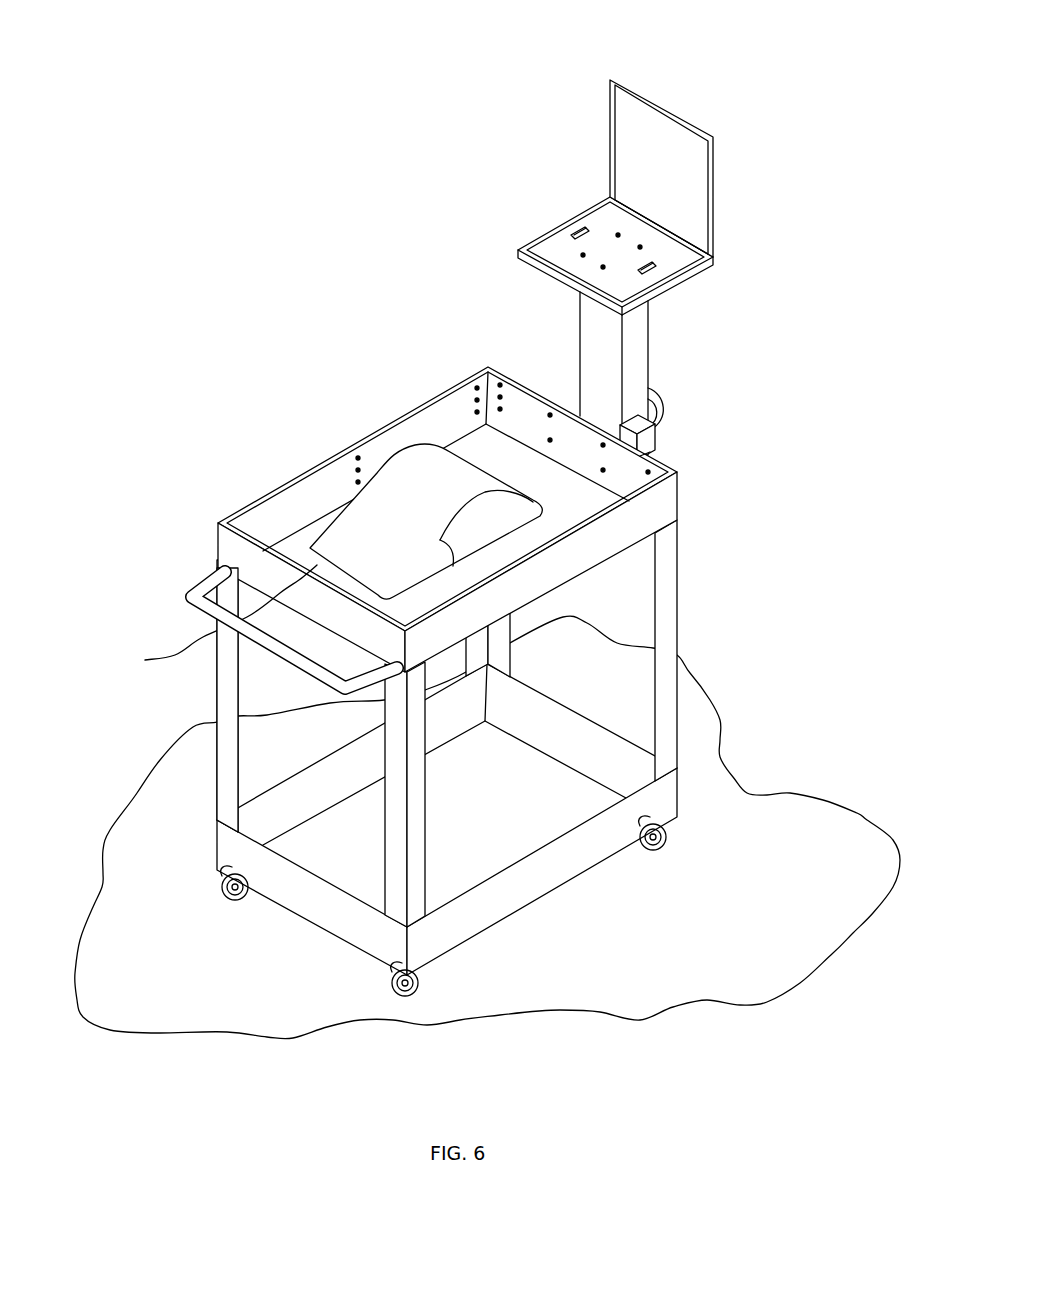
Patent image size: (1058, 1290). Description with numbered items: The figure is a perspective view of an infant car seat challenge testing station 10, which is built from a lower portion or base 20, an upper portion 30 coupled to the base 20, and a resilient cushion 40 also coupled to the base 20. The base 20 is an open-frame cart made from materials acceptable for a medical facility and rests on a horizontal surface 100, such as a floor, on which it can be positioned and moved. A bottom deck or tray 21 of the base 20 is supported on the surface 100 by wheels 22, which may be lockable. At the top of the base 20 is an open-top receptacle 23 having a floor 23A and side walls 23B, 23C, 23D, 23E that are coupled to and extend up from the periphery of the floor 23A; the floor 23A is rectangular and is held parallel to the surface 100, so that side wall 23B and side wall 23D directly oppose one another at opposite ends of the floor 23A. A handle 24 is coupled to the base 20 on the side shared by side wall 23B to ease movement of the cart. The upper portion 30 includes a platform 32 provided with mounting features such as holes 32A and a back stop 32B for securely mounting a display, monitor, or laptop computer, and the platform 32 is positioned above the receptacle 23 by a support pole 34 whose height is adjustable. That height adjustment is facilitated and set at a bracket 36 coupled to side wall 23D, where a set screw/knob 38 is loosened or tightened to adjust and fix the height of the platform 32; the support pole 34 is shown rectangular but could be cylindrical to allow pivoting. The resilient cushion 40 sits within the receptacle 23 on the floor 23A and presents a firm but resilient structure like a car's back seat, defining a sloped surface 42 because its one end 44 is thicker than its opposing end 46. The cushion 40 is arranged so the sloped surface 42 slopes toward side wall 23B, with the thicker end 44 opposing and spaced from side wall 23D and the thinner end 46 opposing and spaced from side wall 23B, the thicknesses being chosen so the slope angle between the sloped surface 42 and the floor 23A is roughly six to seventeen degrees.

The infant car seat challenge testing station 10 is at (260, 270).
The base 20 is at (479, 508).
The bottom deck or tray 21 is at (579, 878).
The wheels 22 is at (385, 982).
The open-top receptacle 23 is at (427, 495).
The floor 23A is at (492, 433).
The side wall 23B is at (235, 552).
The side wall 23C is at (660, 505).
The side wall 23D is at (518, 402).
The side wall 23E is at (347, 453).
The handle 24 is at (183, 607).
The upper portion 30 is at (659, 238).
The platform 32 is at (606, 166).
The holes 32A is at (578, 230).
The back stop 32B is at (658, 120).
The support pole 34 is at (640, 342).
The bracket 36 is at (645, 445).
The set screw/knob 38 is at (660, 405).
The resilient cushion 40 is at (447, 579).
The sloped surface 42 is at (393, 507).
The thicker end 44 is at (650, 452).
The thinner end 46 is at (216, 619).
The horizontal surface 100 is at (833, 926).